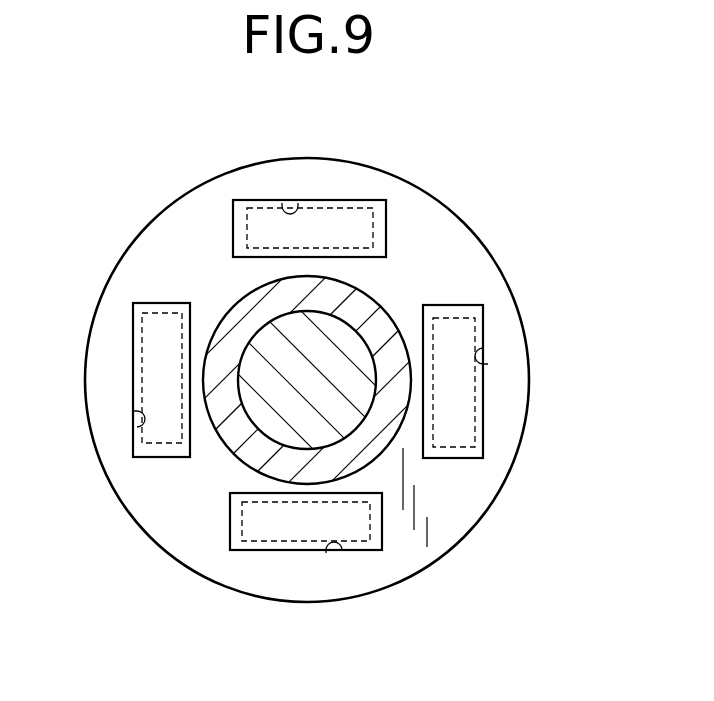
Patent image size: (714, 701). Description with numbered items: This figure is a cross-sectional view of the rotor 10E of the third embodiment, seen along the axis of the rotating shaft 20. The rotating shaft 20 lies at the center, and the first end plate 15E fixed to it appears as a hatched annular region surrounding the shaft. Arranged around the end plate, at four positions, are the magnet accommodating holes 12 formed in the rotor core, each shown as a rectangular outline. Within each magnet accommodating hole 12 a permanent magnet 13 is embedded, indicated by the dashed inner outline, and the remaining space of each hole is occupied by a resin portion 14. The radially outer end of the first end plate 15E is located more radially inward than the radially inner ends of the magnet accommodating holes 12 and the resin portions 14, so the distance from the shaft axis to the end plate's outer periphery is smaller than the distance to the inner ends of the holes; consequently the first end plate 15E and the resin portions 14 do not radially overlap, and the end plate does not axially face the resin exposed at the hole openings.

The rotor 10E is at (453, 173).
The first end plate 15E is at (372, 312).
The rotating shaft 20 is at (283, 353).
The magnet accommodating hole 12 is at (282, 203).
The magnet 13 is at (323, 208).
The resin portion 14 is at (358, 232).